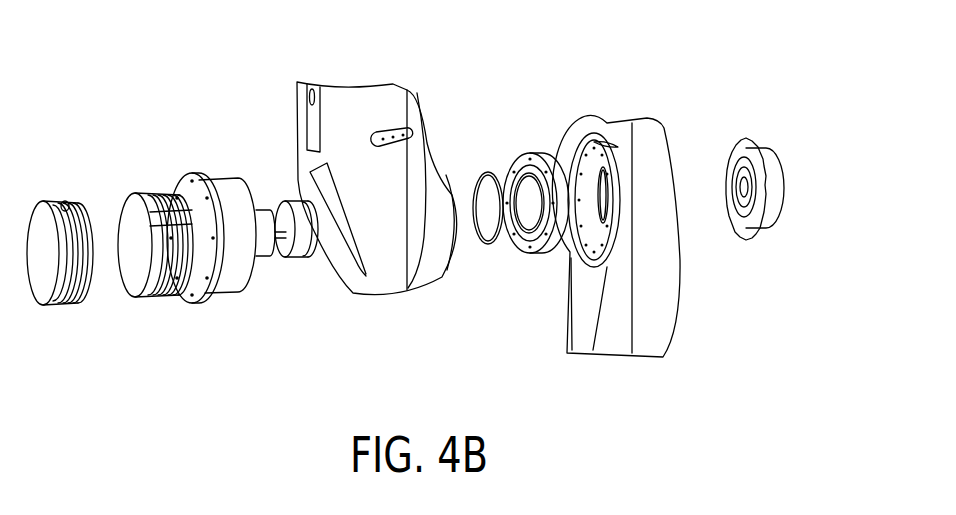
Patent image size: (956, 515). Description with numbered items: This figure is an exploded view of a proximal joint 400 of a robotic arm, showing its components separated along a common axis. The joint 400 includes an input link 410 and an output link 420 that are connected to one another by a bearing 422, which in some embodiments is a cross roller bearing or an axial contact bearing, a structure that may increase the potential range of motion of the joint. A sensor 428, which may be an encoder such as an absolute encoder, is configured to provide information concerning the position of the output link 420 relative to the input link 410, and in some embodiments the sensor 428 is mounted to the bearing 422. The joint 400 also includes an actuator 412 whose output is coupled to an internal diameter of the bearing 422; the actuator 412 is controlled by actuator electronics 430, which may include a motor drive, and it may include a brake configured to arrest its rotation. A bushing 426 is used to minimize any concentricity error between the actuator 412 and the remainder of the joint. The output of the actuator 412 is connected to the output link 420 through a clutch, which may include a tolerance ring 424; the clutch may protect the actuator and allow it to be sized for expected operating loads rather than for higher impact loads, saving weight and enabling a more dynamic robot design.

The proximal joint 400 is at (660, 82).
The input link 410 is at (297, 112).
The actuator 412 is at (233, 294).
The output link 420 is at (663, 313).
The bearing 422 is at (535, 153).
The tolerance ring 424 is at (783, 208).
The bushing 426 is at (302, 260).
The sensor 428 is at (486, 171).
The actuator electronics 430 is at (60, 202).